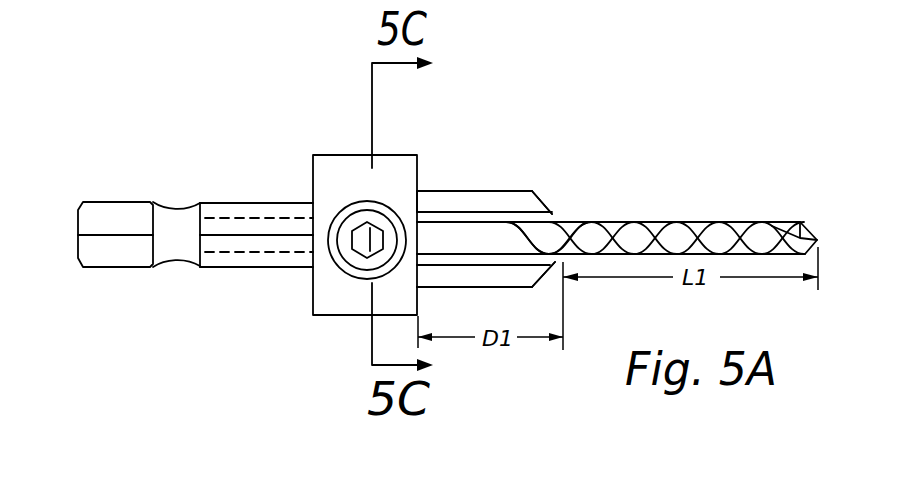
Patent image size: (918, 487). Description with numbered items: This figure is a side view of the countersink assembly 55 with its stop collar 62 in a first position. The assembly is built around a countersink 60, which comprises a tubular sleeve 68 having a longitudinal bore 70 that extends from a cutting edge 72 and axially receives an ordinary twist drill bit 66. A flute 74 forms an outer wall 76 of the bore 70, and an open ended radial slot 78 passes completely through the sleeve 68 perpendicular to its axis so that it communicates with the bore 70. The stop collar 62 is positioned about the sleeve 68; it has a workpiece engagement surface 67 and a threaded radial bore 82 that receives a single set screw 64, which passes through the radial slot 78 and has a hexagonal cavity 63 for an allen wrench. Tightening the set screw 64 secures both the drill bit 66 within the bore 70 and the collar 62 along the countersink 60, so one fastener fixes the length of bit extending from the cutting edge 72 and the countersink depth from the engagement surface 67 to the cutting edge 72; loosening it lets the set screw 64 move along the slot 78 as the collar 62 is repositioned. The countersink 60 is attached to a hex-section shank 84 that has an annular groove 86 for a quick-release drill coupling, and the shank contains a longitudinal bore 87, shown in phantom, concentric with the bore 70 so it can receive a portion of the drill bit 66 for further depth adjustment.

The countersink assembly 55 is at (477, 92).
The shank 84 is at (120, 202).
The annular groove 86 is at (175, 212).
The longitudinal bore 87 is at (226, 200).
The stop collar 62 is at (348, 140).
The hexagonal cavity 63 is at (365, 226).
The set screw 64 is at (360, 248).
The radial bore 82 is at (397, 232).
The workpiece engagement surface 67 is at (418, 176).
The countersink 60 is at (462, 191).
The flute 74 is at (498, 191).
The longitudinal bore 70 is at (552, 213).
The cutting edge 72 is at (558, 221).
The drill bit 66 is at (790, 227).
The radial slot 78 is at (549, 262).
The tubular sleeve 68 is at (435, 273).
The outer wall 76 is at (505, 273).